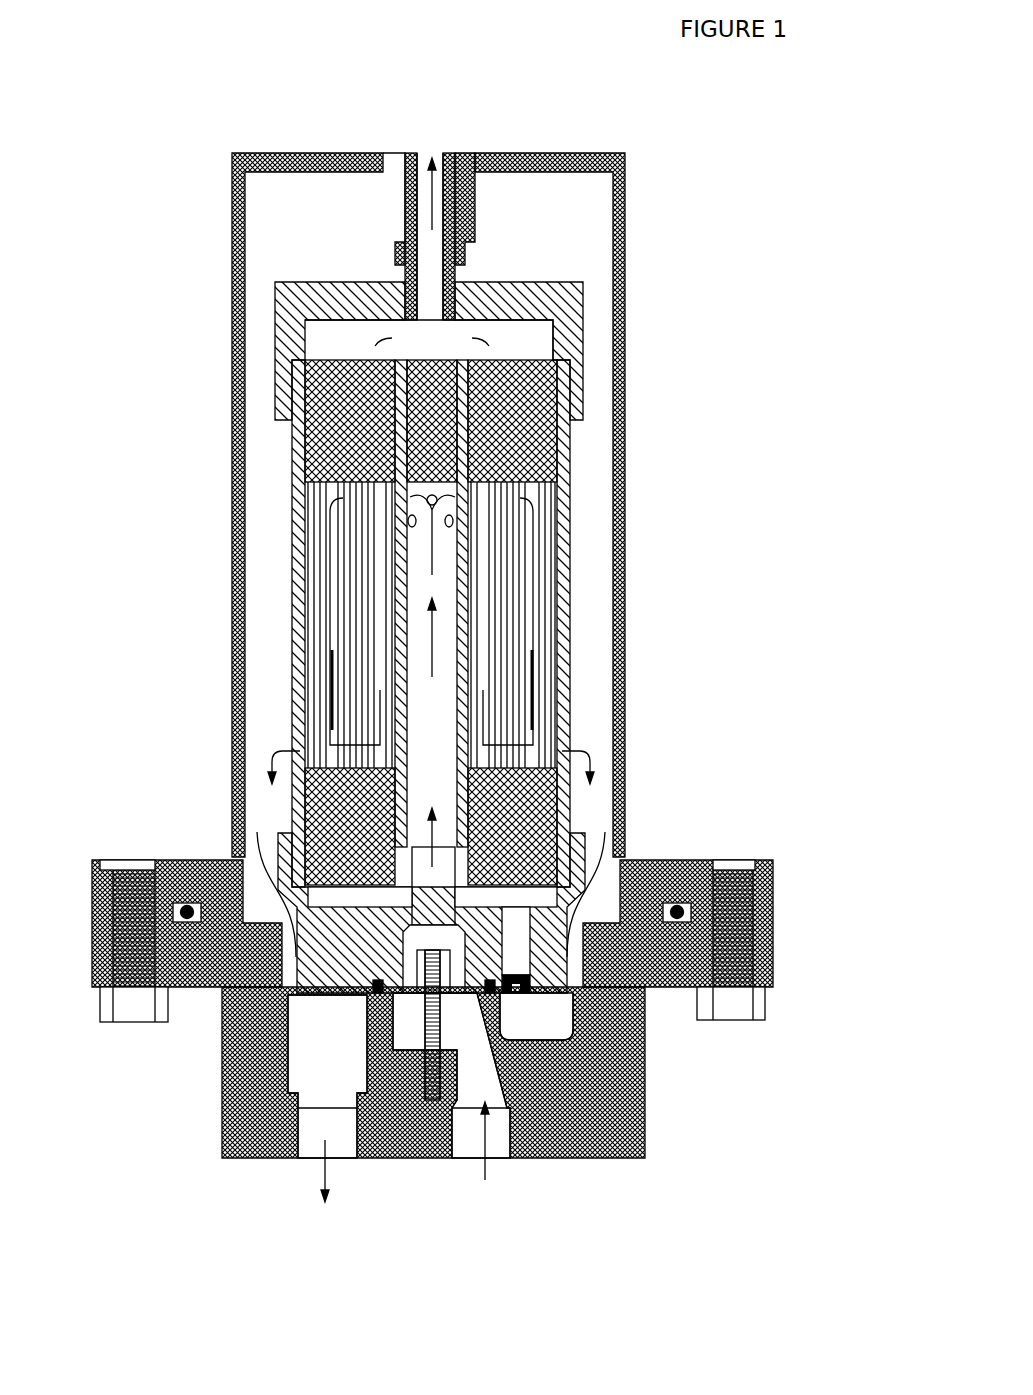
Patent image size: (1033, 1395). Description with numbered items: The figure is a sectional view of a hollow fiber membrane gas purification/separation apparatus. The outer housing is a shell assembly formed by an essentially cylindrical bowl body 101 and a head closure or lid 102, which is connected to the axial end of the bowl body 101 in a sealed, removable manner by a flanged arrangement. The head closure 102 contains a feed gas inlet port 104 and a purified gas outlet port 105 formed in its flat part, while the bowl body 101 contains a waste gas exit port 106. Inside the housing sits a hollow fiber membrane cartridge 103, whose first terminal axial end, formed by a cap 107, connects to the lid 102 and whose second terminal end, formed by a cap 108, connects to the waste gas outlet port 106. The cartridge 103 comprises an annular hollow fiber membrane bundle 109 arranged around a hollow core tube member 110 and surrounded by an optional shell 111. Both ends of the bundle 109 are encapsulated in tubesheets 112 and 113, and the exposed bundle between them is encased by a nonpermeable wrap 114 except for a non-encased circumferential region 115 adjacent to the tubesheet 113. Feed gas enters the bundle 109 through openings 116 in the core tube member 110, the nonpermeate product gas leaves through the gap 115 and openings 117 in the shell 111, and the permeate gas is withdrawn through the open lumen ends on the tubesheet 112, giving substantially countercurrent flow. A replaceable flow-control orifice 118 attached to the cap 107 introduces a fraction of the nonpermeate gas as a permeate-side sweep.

The bowl body 101 is at (627, 753).
The head closure 102 is at (620, 1122).
The hollow fiber membrane cartridge 103 is at (583, 677).
The feed gas inlet port 104 is at (497, 1158).
The purified gas outlet port 105 is at (345, 1158).
The waste gas exit port 106 is at (422, 167).
The cap 107 is at (222, 1058).
The cap 108 is at (583, 278).
The hollow fiber membrane bundle 109 is at (510, 596).
The hollow core tube member 110 is at (470, 672).
The shell 111 is at (290, 557).
The tubesheet 112 is at (505, 413).
The tubesheet 113 is at (337, 820).
The wrap 114 is at (300, 510).
The non-encased circumferential region 115 is at (330, 745).
The openings 116 is at (455, 519).
The openings 117 is at (330, 745).
The flow-control orifice 118 is at (497, 977).